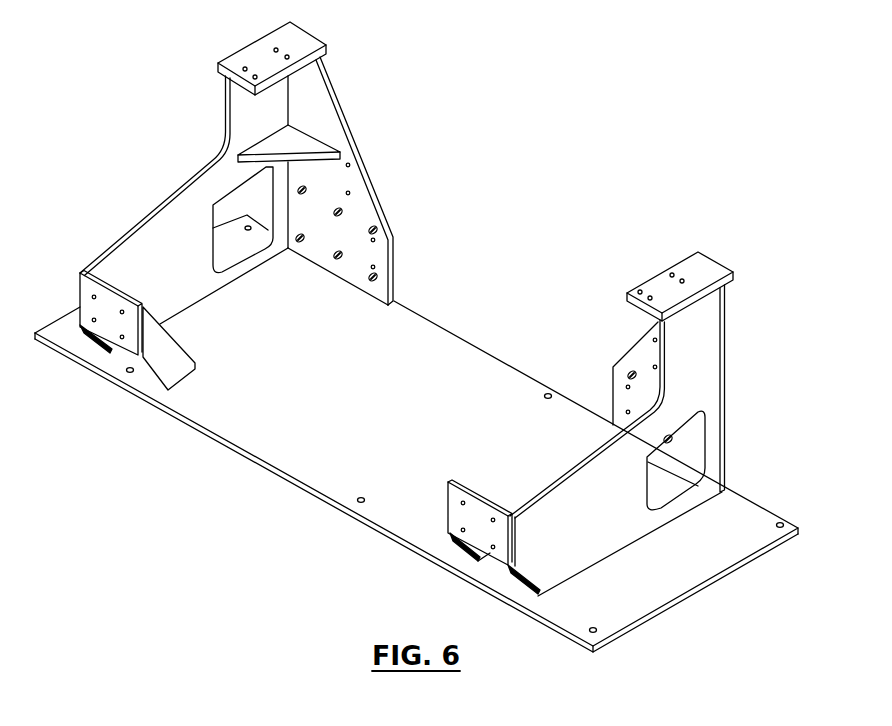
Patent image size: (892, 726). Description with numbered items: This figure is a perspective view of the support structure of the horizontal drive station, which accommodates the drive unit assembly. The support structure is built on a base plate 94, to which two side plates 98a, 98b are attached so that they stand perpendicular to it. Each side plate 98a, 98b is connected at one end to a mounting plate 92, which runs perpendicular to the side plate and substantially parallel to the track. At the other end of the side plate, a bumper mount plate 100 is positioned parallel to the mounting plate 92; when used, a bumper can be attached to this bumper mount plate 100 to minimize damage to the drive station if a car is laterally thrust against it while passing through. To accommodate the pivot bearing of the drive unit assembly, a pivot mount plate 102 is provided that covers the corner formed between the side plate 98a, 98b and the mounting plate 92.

The mounting plate 92 is at (338, 92).
The base plate 94 is at (340, 510).
The side plate 98a is at (219, 215).
The side plate 98b is at (710, 352).
The bumper mount plate 100 is at (110, 318).
The pivot mount plate 102 is at (245, 54).